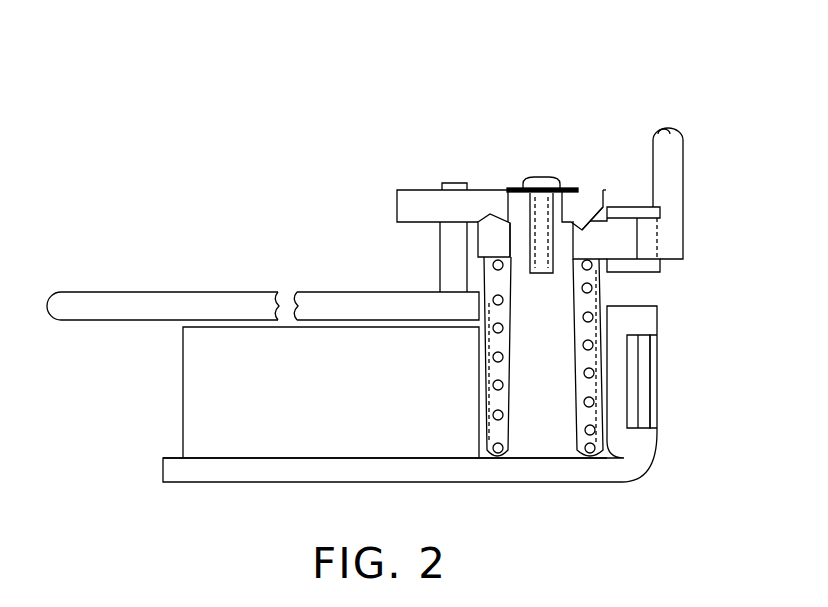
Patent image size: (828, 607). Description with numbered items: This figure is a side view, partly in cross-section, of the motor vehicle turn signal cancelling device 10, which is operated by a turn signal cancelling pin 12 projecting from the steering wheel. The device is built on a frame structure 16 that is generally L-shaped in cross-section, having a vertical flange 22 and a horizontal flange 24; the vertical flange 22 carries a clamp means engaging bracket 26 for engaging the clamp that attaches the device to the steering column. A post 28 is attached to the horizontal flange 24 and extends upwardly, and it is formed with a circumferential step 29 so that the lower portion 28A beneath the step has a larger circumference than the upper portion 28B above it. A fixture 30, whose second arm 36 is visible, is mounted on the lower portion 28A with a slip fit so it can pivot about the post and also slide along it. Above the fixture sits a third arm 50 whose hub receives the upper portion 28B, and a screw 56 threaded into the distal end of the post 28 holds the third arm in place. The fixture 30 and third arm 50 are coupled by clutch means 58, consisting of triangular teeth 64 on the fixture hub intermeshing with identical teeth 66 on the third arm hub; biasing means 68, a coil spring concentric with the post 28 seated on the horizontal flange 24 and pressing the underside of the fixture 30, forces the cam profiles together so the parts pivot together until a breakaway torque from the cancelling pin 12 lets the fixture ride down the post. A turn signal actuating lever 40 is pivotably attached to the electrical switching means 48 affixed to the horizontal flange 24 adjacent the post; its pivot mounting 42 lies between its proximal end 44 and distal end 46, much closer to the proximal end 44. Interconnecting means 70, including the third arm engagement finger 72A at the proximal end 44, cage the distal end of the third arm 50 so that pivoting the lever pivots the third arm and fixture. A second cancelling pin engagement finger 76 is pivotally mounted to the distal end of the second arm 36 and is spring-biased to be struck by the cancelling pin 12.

The turn signal cancelling device 10 is at (485, 88).
The turn signal cancelling pin 12 is at (677, 172).
The frame structure 16 is at (468, 486).
The vertical flange 22 is at (643, 325).
The horizontal flange 24 is at (303, 483).
The clamp means engaging bracket 26 is at (645, 412).
The post 28 is at (550, 418).
The lower portion of the post 28A is at (557, 295).
The upper portion of the post 28B is at (590, 222).
The circumferential step 29 is at (512, 222).
The fixture 30 is at (600, 240).
The second arm 36 is at (625, 252).
The turn signal actuating lever 40 is at (230, 293).
The pivot mounting 42 is at (350, 323).
The proximal end 44 is at (398, 297).
The distal end 46 is at (68, 305).
The electrical switching means 48 is at (213, 372).
The third arm 50 is at (475, 185).
The screw 56 is at (540, 177).
The clutch means 58 is at (612, 193).
The teeth of first cam profile 64 is at (490, 214).
The teeth of second cam profile 66 is at (603, 207).
The biasing means 68 is at (592, 345).
The interconnecting means 70 is at (408, 173).
The third arm engagement finger 72A is at (450, 245).
The second cancelling pin engagement finger 76 is at (638, 215).